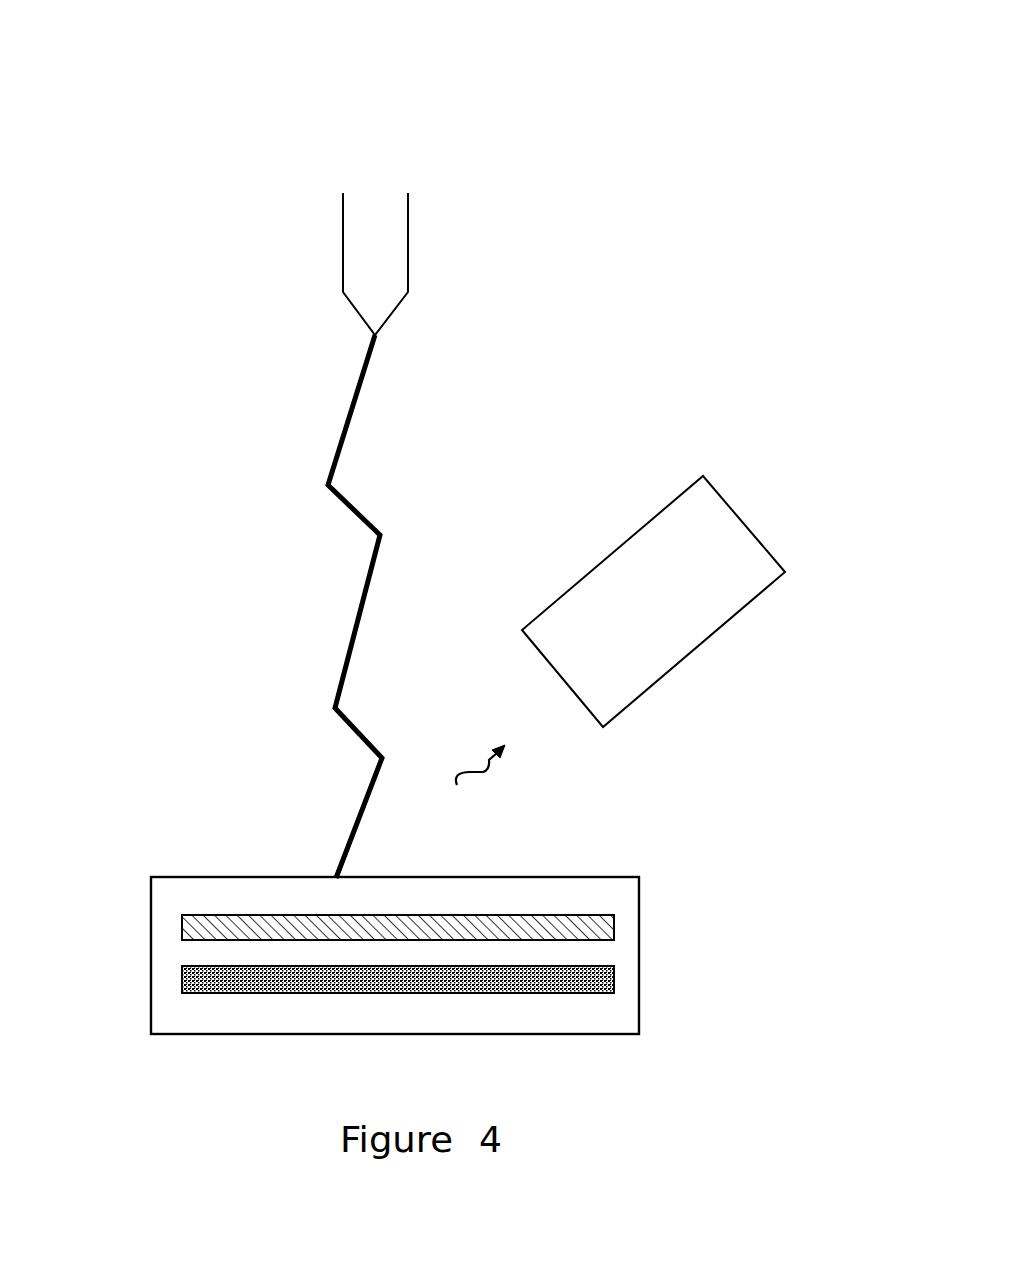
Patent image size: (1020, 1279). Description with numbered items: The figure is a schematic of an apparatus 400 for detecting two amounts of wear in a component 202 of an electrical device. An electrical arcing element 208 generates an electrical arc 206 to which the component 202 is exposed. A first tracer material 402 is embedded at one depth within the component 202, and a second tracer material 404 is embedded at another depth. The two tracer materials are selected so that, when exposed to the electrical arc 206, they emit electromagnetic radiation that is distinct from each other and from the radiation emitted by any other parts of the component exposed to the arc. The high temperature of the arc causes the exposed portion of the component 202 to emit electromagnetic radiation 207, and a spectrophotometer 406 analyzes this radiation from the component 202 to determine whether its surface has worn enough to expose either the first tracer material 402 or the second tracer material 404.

The apparatus 400 is at (245, 238).
The electrical arcing element 208 is at (408, 260).
The electrical arc 206 is at (337, 453).
The spectrophotometer 406 is at (725, 500).
The electromagnetic radiation 207 is at (487, 767).
The component 202 is at (639, 876).
The first tracer material 402 is at (614, 920).
The second tracer material 404 is at (614, 975).